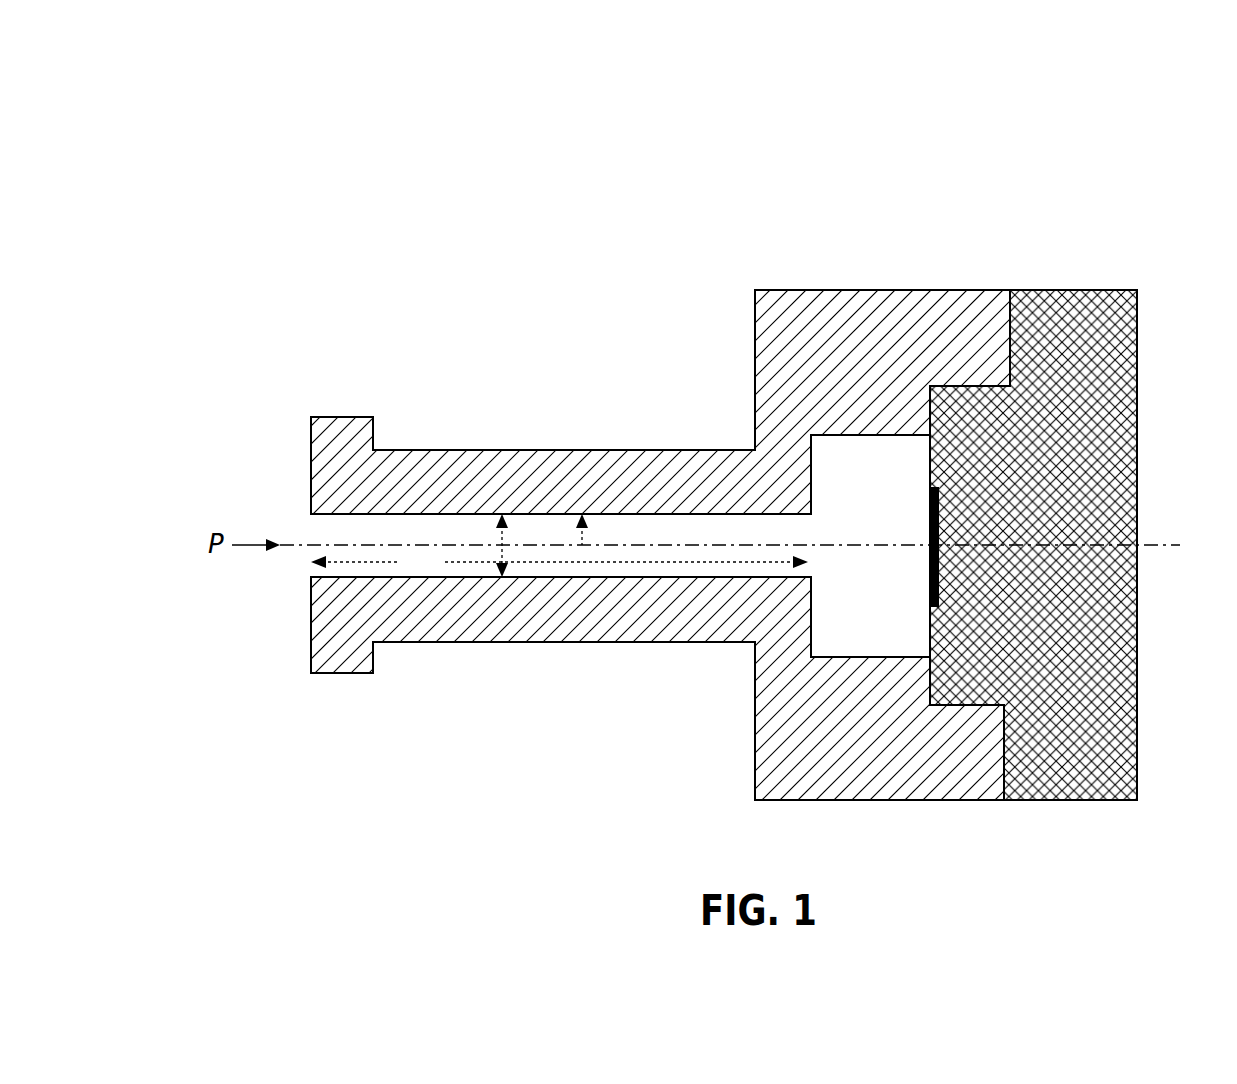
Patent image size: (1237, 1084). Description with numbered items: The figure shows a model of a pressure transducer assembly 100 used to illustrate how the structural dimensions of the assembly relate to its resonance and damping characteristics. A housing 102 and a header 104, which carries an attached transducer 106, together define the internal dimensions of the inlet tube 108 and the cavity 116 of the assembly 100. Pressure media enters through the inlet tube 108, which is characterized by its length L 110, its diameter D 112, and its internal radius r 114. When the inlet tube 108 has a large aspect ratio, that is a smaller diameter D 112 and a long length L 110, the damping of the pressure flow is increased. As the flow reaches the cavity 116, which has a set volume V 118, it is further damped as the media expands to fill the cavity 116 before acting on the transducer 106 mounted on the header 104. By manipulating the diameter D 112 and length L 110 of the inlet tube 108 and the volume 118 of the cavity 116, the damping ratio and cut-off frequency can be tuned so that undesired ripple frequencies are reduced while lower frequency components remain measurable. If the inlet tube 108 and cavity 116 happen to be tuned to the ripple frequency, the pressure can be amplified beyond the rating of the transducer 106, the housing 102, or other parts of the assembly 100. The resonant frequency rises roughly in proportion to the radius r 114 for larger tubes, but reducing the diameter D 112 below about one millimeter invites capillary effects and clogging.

The pressure transducer assembly 100 is at (710, 140).
The housing 102 is at (802, 307).
The header 104 is at (1105, 402).
The transducer 106 is at (938, 528).
The inlet tube 108 is at (340, 530).
The length L 110 is at (415, 573).
The diameter D 112 is at (530, 530).
The radius r 114 is at (608, 530).
The cavity 116 is at (843, 630).
The volume V 118 is at (885, 473).